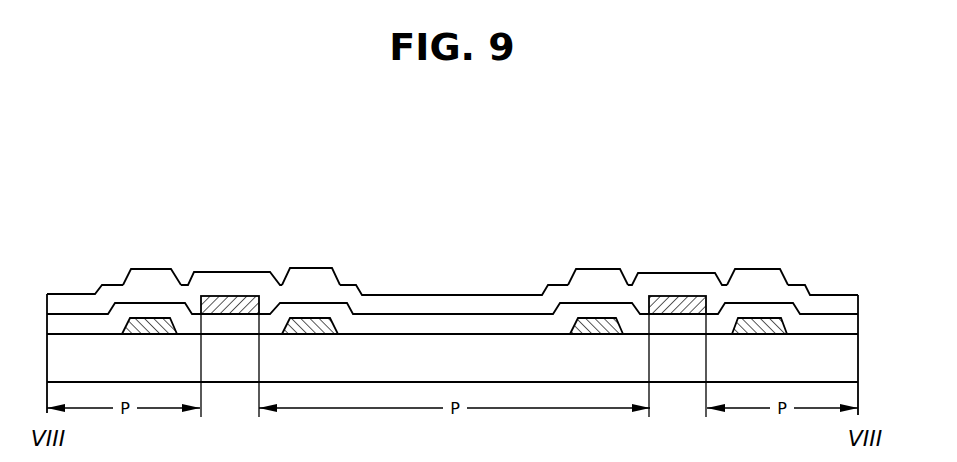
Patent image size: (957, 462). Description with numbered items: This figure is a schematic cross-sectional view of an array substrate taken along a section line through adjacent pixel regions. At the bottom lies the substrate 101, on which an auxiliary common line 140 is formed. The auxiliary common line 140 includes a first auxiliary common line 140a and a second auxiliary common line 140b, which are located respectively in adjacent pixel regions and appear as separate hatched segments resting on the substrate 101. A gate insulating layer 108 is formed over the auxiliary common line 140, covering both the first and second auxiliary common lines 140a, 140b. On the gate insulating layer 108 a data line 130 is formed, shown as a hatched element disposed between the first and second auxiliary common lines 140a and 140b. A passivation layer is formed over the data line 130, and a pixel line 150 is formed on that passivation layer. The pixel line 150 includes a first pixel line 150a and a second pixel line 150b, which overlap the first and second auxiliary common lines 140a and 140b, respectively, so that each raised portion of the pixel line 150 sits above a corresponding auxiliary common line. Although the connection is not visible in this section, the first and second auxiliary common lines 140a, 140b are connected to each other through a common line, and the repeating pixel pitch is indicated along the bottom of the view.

The substrate 101 is at (821, 366).
The gate insulating layer 108 is at (468, 318).
The data line 130 is at (233, 295).
The auxiliary common line 140 is at (145, 378).
The first auxiliary common line 140a is at (315, 334).
The second auxiliary common line 140b is at (147, 334).
The pixel line 150 is at (367, 182).
The first pixel line 150a is at (315, 275).
The second pixel line 150b is at (147, 277).